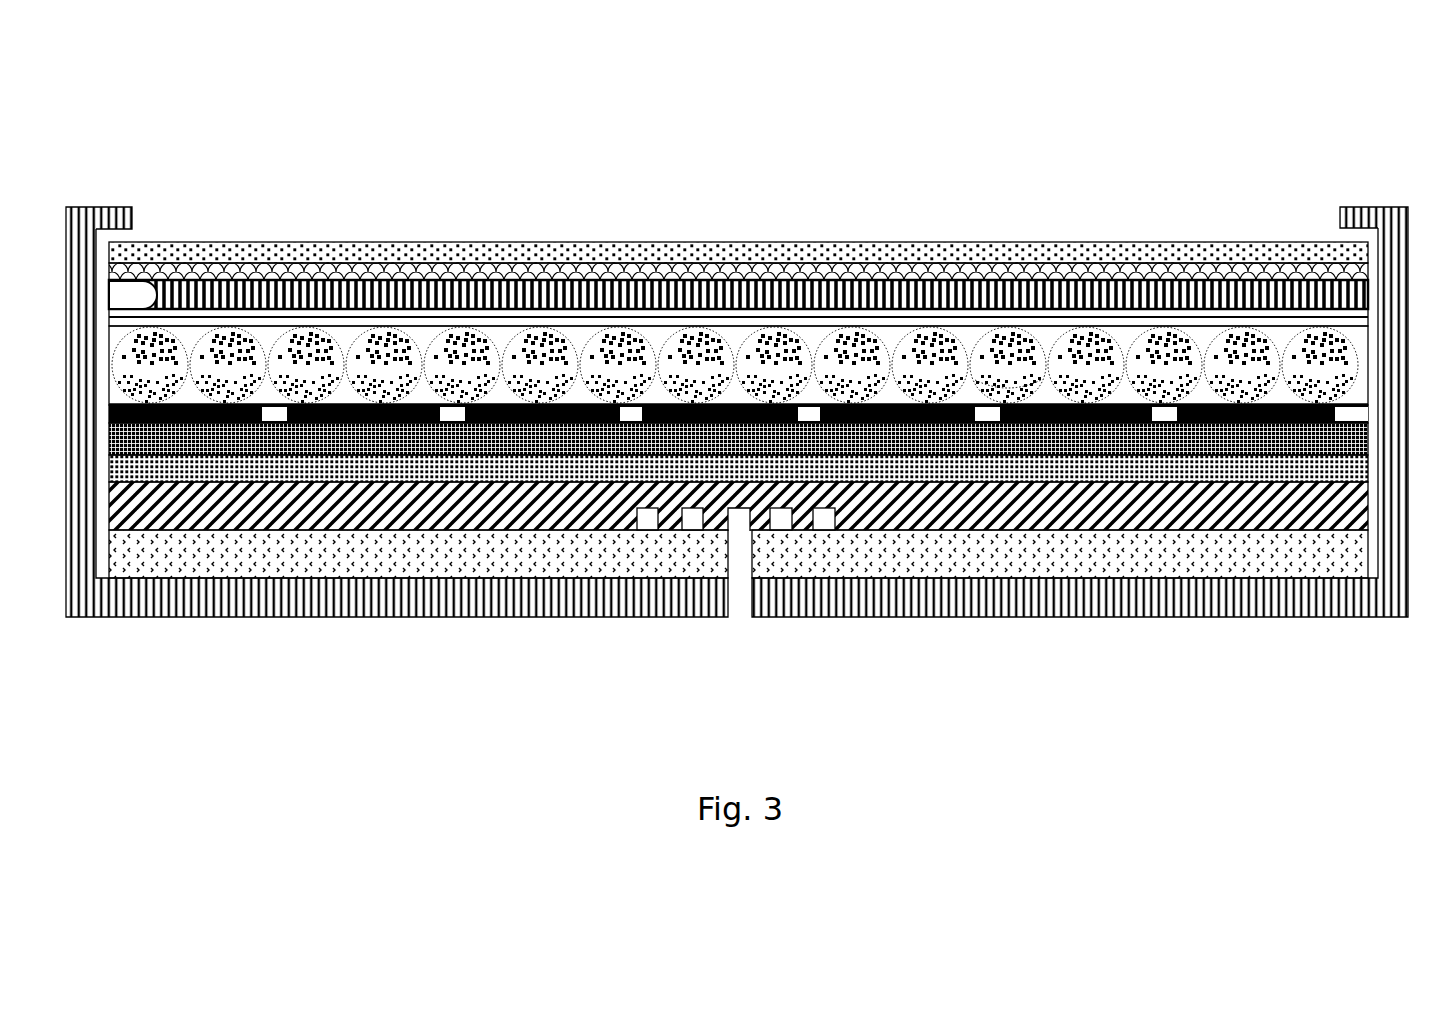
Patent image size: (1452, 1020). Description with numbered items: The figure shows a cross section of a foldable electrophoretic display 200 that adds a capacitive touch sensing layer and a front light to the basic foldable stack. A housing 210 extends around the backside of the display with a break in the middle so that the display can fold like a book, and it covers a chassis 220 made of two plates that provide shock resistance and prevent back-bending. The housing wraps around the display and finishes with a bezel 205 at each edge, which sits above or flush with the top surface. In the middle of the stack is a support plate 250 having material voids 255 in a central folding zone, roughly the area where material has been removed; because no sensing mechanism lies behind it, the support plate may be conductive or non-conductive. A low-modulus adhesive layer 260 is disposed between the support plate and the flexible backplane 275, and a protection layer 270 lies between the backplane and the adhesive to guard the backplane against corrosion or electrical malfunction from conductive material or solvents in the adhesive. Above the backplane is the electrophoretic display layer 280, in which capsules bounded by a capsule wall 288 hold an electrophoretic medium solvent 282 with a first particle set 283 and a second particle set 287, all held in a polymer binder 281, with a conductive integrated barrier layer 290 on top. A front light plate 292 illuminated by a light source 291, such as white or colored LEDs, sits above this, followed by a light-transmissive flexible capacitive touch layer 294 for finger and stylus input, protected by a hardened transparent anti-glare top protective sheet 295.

The foldable electrophoretic display 200 is at (297, 86).
The bezel 205 is at (103, 207).
The housing 210 is at (98, 592).
The chassis 220 is at (265, 560).
The support plate 250 is at (386, 508).
The material voids 255 is at (822, 512).
The low-modulus adhesive layer 260 is at (453, 465).
The protection layer 270 is at (532, 448).
The flexible backplane 275 is at (657, 410).
The electrophoretic display layer 280 is at (1128, 335).
The polymer binder 281 is at (817, 400).
The electrophoretic medium solvent 282 is at (912, 375).
The first particle set 283 is at (1000, 375).
The second particle set 287 is at (1012, 345).
The capsule wall 288 is at (1086, 345).
The conductive integrated barrier layer 290 is at (1200, 318).
The light source 291 is at (135, 290).
The front light plate 292 is at (245, 297).
The flexible capacitive touch layer 294 is at (338, 272).
The top protective sheet 295 is at (1272, 248).